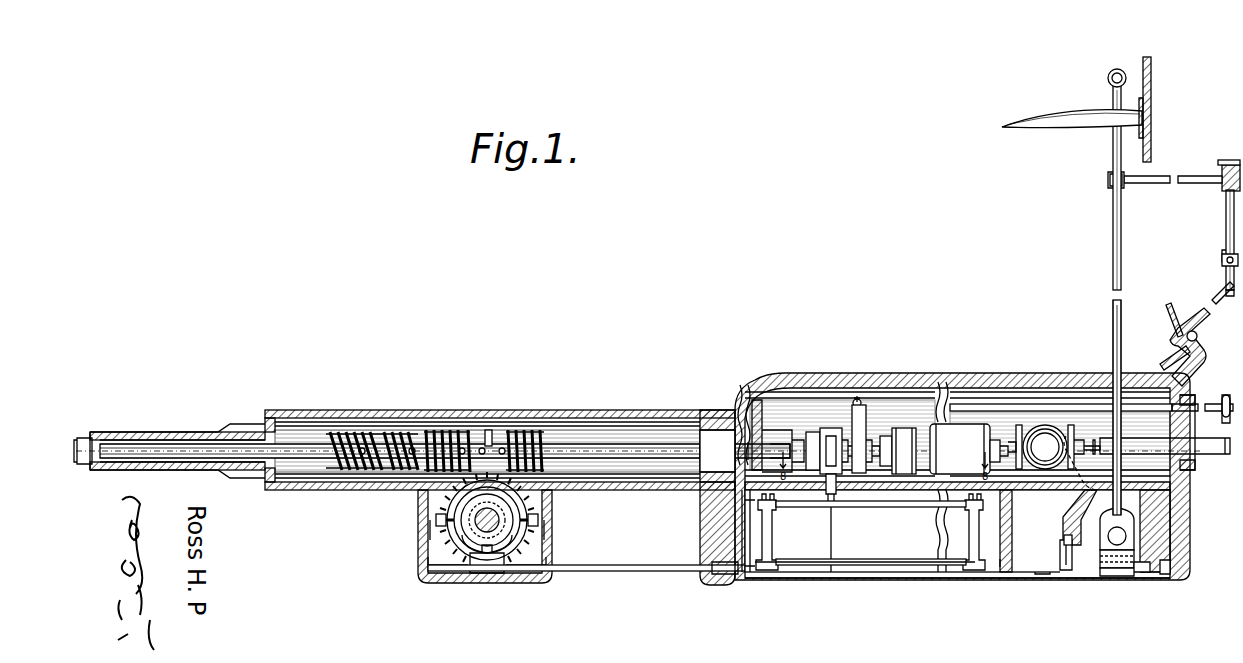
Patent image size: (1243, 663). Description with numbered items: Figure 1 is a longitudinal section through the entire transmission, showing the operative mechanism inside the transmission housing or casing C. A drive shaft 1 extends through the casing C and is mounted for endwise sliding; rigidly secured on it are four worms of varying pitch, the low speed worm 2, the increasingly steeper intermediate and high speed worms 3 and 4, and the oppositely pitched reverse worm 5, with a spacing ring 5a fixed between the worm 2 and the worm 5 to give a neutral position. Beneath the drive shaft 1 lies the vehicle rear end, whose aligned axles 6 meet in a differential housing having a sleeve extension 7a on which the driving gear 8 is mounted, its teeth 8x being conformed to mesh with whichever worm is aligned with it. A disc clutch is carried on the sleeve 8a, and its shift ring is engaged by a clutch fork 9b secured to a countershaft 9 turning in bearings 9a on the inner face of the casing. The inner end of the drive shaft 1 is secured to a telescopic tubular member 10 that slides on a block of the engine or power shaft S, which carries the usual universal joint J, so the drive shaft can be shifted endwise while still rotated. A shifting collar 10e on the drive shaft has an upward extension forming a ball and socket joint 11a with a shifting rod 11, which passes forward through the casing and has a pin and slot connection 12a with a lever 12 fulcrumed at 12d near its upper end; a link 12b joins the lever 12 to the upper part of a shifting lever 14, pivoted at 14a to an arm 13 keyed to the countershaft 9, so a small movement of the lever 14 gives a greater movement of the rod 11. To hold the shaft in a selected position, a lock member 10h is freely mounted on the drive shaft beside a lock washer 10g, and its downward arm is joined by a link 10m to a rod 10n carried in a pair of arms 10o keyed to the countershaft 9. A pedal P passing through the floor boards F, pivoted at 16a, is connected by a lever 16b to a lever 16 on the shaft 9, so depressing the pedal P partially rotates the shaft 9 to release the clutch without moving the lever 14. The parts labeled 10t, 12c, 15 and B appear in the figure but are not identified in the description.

The drive shaft 1 is at (609, 456).
The low speed worm 2 is at (432, 430).
The intermediate speed worm 3 is at (389, 430).
The high speed worm 4 is at (351, 430).
The reverse speed worm 5 is at (544, 430).
The spacing ring 5a is at (493, 430).
The axles 6 is at (442, 530).
The sleeve extension 7a is at (520, 580).
The driving gear 8 is at (430, 511).
The sleeve 8a is at (452, 522).
The teeth 8x is at (515, 516).
The countershaft 9 is at (642, 574).
The bearings 9a is at (420, 578).
The clutch fork 9b is at (473, 575).
The telescopic tubular member 10 is at (960, 426).
The shifting collar 10e is at (864, 440).
The lock washer 10g is at (756, 403).
The lock member 10h is at (820, 434).
The link 10m is at (826, 504).
The rod 10n is at (849, 505).
The arms 10o is at (774, 550).
The connecting links 10t is at (762, 478).
The shifting rod 11 is at (1003, 404).
The ball and socket joint 11a is at (858, 398).
The lever 12 is at (1090, 36).
The pin and slot connection 12a is at (1205, 413).
The link 12b is at (1158, 184).
The block 12c is at (1226, 170).
The fulcrum 12d is at (1223, 256).
The arm 13 is at (1094, 574).
The shifting lever 14 is at (1110, 244).
The pivot 14a is at (1123, 536).
The lever arm 15 is at (1058, 134).
The lever 16 is at (1066, 557).
The pivot 16a is at (1192, 332).
The lever 16b is at (1080, 508).
The plate B is at (1150, 82).
The transmission housing C is at (908, 581).
The floor boards F is at (1158, 352).
The universal joint J is at (1046, 442).
The pedal P is at (1171, 318).
The power shaft S is at (1216, 454).